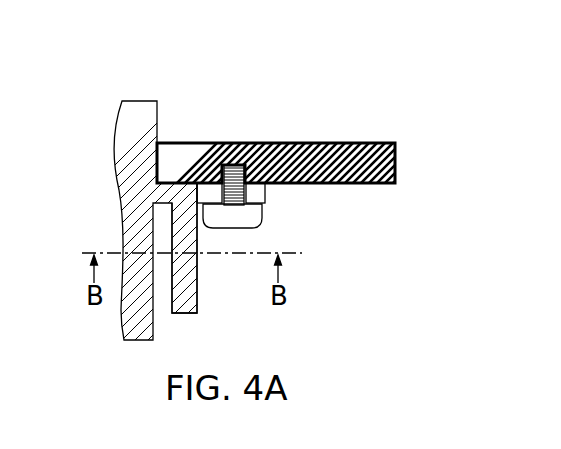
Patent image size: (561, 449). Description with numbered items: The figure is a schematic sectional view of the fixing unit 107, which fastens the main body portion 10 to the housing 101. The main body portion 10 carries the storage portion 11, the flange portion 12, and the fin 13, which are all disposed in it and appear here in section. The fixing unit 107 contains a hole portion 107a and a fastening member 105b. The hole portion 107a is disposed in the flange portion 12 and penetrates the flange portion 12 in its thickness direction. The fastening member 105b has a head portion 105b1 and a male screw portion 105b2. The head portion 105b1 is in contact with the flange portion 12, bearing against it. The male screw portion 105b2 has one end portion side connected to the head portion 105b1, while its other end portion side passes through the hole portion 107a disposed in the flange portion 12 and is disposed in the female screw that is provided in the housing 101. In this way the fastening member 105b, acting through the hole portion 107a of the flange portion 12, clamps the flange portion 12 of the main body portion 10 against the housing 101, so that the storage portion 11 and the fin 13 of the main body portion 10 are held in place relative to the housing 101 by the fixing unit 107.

The main body portion 10 is at (252, 205).
The storage portion 11 is at (143, 120).
The flange portion 12 is at (196, 194).
The fin 13 is at (185, 297).
The housing 101 is at (368, 150).
The fastening member 105b is at (318, 192).
The head portion 105b1 is at (246, 219).
The male screw portion 105b2 is at (237, 165).
The fixing unit 107 is at (342, 228).
The hole portion 107a is at (251, 193).